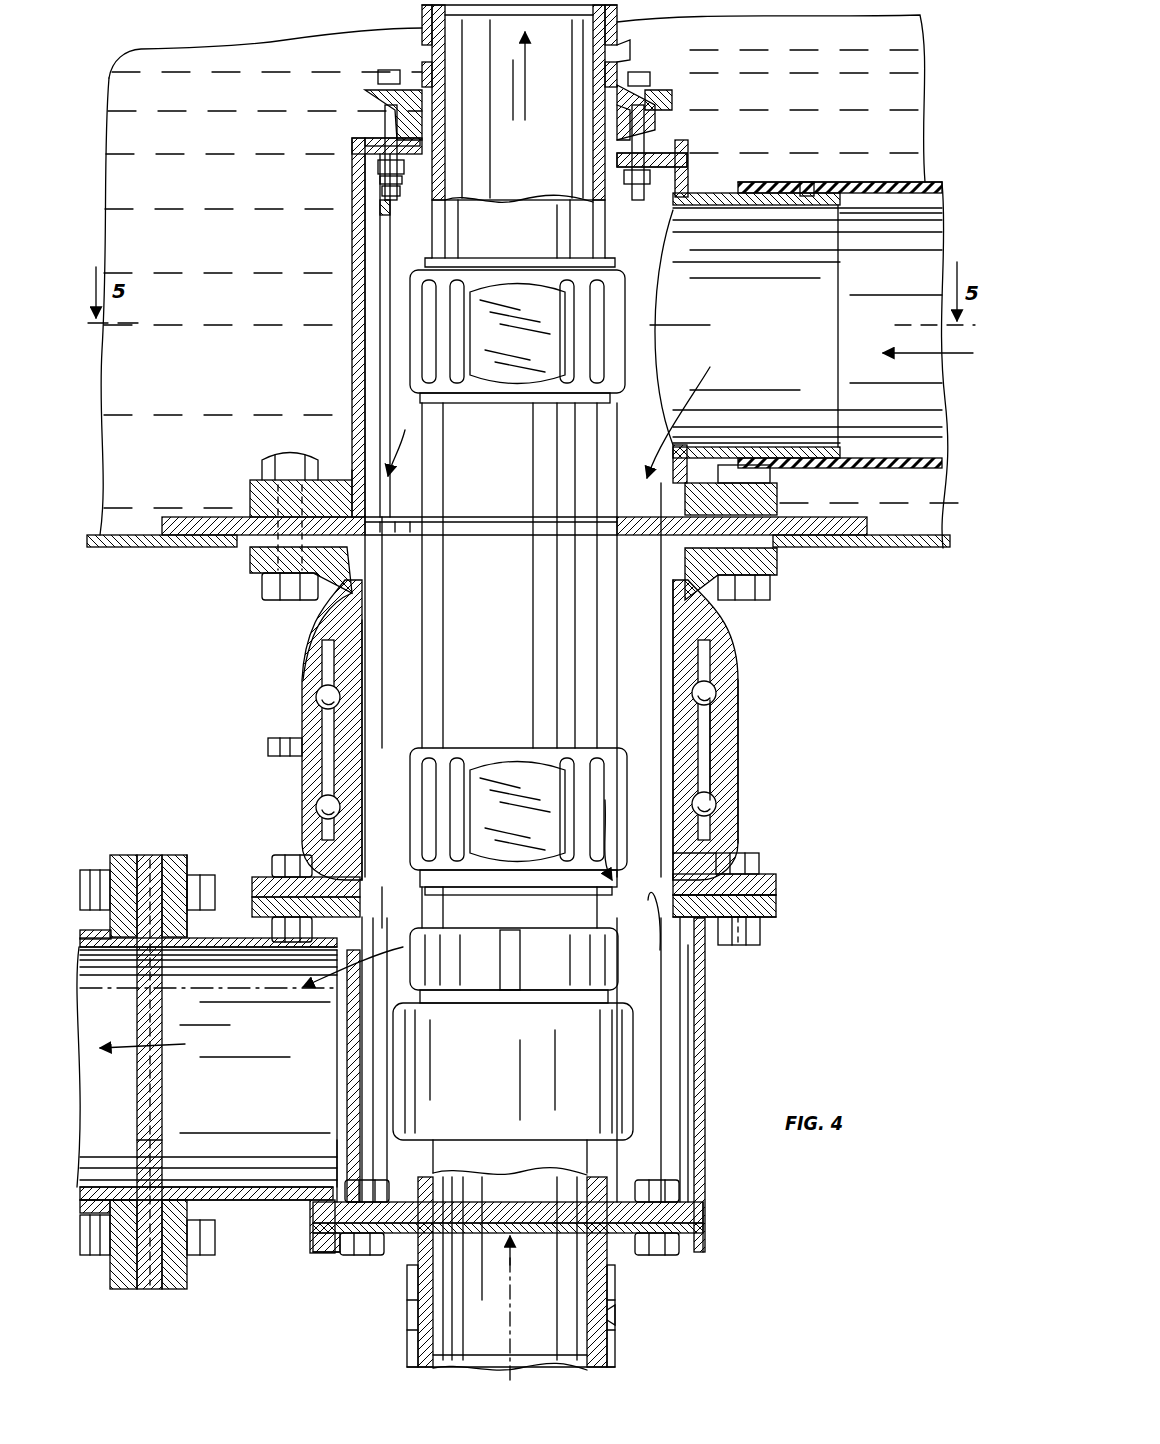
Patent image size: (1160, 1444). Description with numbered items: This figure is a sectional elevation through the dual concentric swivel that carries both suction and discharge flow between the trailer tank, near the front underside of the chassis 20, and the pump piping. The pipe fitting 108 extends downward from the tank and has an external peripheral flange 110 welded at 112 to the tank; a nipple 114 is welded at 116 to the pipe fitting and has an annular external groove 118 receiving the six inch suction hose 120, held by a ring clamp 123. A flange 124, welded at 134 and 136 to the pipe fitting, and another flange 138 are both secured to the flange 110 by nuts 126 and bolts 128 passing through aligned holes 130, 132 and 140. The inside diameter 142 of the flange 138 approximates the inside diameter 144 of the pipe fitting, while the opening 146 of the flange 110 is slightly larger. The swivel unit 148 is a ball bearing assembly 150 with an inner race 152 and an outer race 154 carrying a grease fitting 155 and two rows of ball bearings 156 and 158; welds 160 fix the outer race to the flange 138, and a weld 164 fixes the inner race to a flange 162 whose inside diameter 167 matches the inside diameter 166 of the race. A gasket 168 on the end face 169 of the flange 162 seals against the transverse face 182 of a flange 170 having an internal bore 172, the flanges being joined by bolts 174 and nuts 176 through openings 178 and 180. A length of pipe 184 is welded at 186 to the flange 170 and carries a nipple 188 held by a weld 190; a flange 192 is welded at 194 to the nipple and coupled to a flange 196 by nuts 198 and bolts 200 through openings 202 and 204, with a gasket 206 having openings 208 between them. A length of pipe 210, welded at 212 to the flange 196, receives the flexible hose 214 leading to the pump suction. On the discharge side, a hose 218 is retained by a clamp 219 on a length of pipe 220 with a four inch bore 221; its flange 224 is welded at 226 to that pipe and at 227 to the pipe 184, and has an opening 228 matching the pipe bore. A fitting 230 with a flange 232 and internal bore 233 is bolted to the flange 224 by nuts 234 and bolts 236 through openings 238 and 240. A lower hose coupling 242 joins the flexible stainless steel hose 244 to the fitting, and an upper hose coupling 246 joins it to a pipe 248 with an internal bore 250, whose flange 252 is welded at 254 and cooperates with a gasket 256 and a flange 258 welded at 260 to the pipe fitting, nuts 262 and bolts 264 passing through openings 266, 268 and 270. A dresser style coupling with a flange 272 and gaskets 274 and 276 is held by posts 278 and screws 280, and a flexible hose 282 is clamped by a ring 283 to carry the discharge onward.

The chassis 20 is at (930, 548).
The pipe fitting 108 is at (352, 296).
The external peripheral flange 110 is at (195, 517).
The weld 112 is at (135, 548).
The nipple 114 is at (720, 205).
The weld 116 is at (700, 210).
The annular external groove 118 is at (780, 205).
The suction hose 120 is at (912, 182).
The ring clamp 123 is at (808, 182).
The flange 124 is at (250, 495).
The nuts 126 is at (290, 630).
The bolts 128 is at (285, 452).
The holes 130 is at (265, 580).
The holes 132 is at (250, 565).
The weld 134 is at (350, 475).
The weld 136 is at (420, 517).
The flange 138 is at (777, 570).
The holes 140 is at (292, 600).
The inside diameter 142 is at (365, 575).
The inside diameter 144 is at (360, 372).
The opening 146 is at (420, 535).
The swivel unit 148 is at (740, 715).
The ball bearing assembly 150 is at (745, 777).
The inner race 152 is at (712, 745).
The outer race 154 is at (735, 795).
The grease fitting 155 is at (268, 744).
The ball bearings 156 is at (718, 690).
The ball bearings 158 is at (718, 808).
The welds 160 is at (712, 595).
The flange 162 is at (776, 880).
The weld 164 is at (760, 853).
The inside diameter 166 is at (368, 650).
The inside diameter 167 is at (646, 900).
The gasket 168 is at (320, 877).
The end face 169 is at (270, 875).
The flange 170 is at (778, 912).
The internal bore 172 is at (670, 900).
The bolts 174 is at (760, 860).
The nuts 176 is at (750, 945).
The openings 178 is at (778, 900).
The openings 180 is at (765, 948).
The transverse face 182 is at (303, 987).
The length of pipe 184 is at (705, 1058).
The weld 186 is at (712, 950).
The nipple 188 is at (245, 1190).
The weld 190 is at (305, 1215).
The flange 192 is at (187, 1285).
The weld 194 is at (180, 1190).
The flange 196 is at (112, 1285).
The nuts 198 is at (185, 850).
The bolts 200 is at (105, 860).
The openings 202 is at (165, 855).
The openings 204 is at (102, 835).
The gasket 206 is at (150, 1290).
The openings 208 is at (170, 950).
The length of pipe 210 is at (150, 1190).
The weld 212 is at (148, 1187).
The flexible hose 214 is at (92, 940).
The hose 218 is at (615, 1357).
The clamp 219 is at (615, 1320).
The length of pipe 220 is at (430, 1275).
The bore 221 is at (435, 1322).
The flange 224 is at (705, 1230).
The weld 226 is at (410, 1290).
The weld 227 is at (318, 1255).
The opening 228 is at (433, 1228).
The fitting 230 is at (468, 1150).
The flange 232 is at (370, 1060).
The internal bore 233 is at (433, 1200).
The nuts 234 is at (345, 1180).
The bolts 236 is at (365, 1255).
The openings 238 is at (660, 1255).
The openings 240 is at (708, 1200).
The lower hose coupling 242 is at (510, 760).
The flexible stainless steel hose 244 is at (680, 632).
The upper hose coupling 246 is at (610, 330).
The pipe 248 is at (612, 30).
The internal bore 250 is at (600, 165).
The flange 252 is at (380, 180).
The weld 254 is at (430, 220).
The gasket 256 is at (440, 200).
The flange 258 is at (690, 167).
The weld 260 is at (660, 140).
The nuts 262 is at (382, 192).
The bolts 264 is at (385, 125).
The openings 266 is at (403, 335).
The openings 268 is at (378, 166).
The openings 270 is at (372, 140).
The flange 272 is at (365, 92).
The gasket 274 is at (617, 100).
The gasket 276 is at (617, 122).
The posts 278 is at (660, 122).
The screws or bolts 280 is at (388, 70).
The flexible hose 282 is at (418, 18).
The ring 283 is at (620, 48).